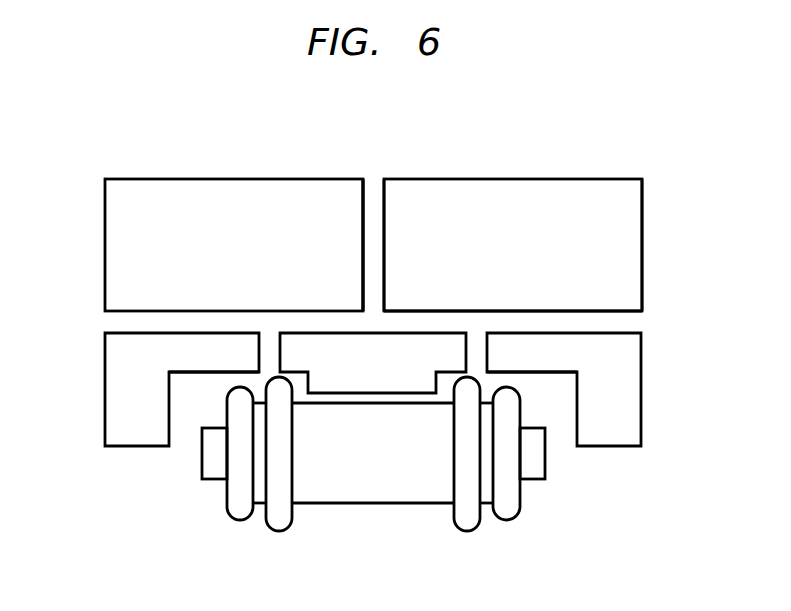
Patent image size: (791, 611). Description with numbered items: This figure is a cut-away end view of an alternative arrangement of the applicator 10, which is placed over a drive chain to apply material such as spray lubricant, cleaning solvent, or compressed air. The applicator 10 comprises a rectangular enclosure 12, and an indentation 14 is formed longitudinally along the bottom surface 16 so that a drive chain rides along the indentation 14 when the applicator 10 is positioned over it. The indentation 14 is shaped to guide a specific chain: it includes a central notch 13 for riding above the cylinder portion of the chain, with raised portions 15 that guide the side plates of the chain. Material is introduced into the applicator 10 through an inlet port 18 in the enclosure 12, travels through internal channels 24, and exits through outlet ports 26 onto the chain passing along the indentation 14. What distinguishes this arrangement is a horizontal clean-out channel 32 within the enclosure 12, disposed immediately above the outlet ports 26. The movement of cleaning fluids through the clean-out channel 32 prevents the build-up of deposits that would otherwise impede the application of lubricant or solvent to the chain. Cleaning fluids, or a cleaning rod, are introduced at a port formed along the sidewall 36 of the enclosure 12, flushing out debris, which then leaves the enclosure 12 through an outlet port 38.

The applicator 10 is at (182, 140).
The enclosure 12 is at (626, 199).
The central notch 13 is at (371, 396).
The indentation 14 is at (561, 447).
The raised portions 15 is at (226, 370).
The bottom surface 16 is at (136, 447).
The inlet port 18 is at (377, 180).
The internal channels 24 is at (363, 243).
The outlet ports 26 is at (283, 357).
The clean-out channel 32 is at (630, 322).
The sidewall 36 is at (643, 253).
The outlet port 38 is at (105, 311).